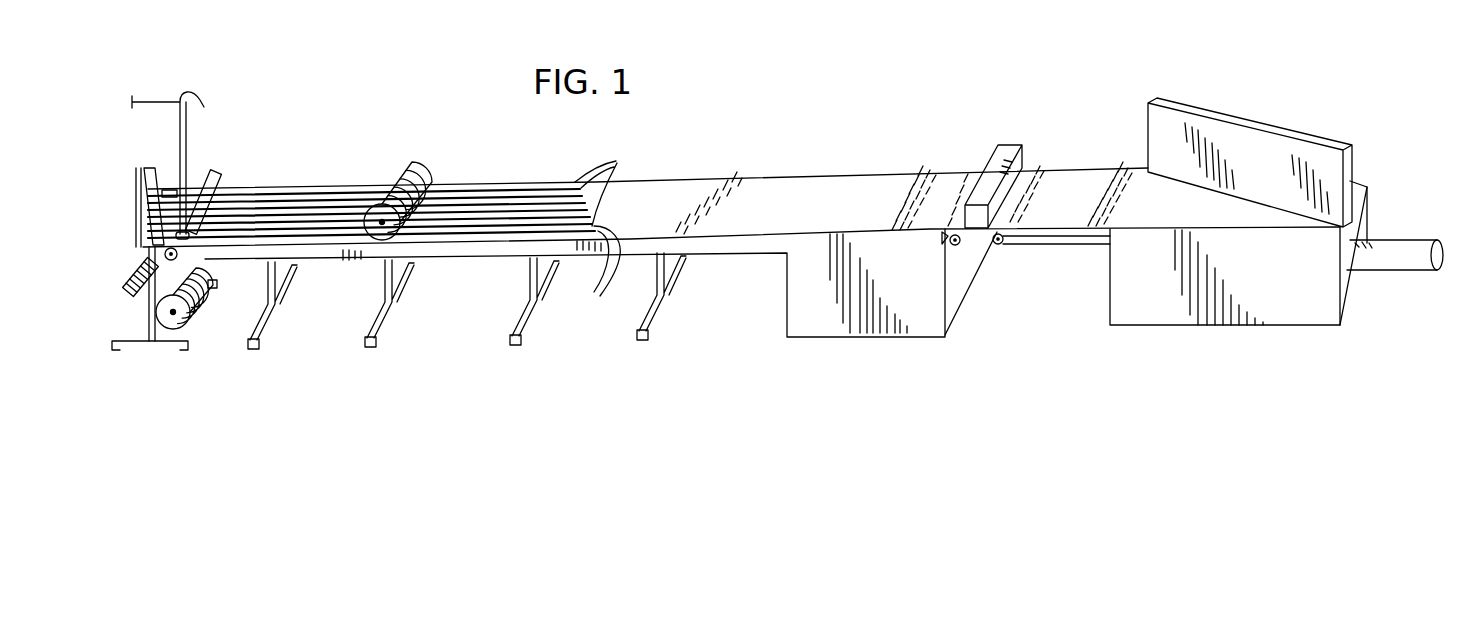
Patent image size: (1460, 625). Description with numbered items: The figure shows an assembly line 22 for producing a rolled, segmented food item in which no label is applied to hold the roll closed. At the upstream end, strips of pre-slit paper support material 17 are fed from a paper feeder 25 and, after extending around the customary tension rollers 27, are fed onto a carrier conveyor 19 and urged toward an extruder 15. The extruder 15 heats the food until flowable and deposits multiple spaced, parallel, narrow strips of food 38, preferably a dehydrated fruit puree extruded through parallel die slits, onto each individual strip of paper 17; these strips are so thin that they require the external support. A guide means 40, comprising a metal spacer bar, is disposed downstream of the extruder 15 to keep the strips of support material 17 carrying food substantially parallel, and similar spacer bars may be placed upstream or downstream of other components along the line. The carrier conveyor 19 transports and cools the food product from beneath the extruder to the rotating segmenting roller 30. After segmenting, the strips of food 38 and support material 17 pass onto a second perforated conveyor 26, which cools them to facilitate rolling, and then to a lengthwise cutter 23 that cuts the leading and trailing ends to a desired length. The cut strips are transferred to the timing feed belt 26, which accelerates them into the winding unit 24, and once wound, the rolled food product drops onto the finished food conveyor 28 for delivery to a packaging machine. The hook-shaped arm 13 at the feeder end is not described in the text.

The hold-down hook arm 13 is at (183, 165).
The extruder 15 is at (220, 172).
The support material 17 is at (150, 248).
The carrier conveyor 19 is at (748, 240).
The assembly line 22 is at (701, 170).
The lengthwise cutter 23 is at (1018, 146).
The winding unit 24 is at (1305, 141).
The paper feeder 25 is at (190, 322).
The second perforated conveyor 26 is at (1072, 220).
The tension rollers 27 is at (136, 278).
The finished food conveyor 28 is at (1405, 258).
The segmenting roller 30 is at (367, 193).
The strips of food 38 is at (604, 232).
The guide means 40 is at (400, 262).